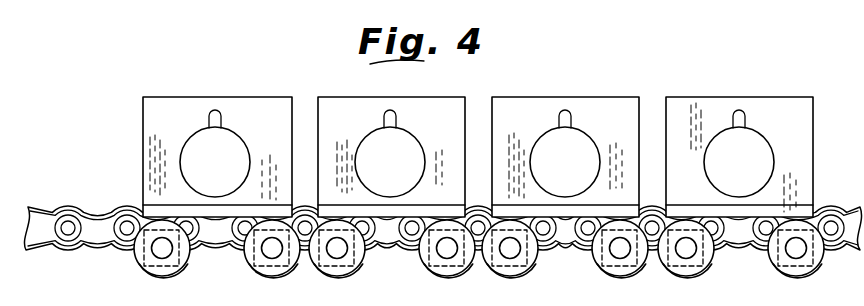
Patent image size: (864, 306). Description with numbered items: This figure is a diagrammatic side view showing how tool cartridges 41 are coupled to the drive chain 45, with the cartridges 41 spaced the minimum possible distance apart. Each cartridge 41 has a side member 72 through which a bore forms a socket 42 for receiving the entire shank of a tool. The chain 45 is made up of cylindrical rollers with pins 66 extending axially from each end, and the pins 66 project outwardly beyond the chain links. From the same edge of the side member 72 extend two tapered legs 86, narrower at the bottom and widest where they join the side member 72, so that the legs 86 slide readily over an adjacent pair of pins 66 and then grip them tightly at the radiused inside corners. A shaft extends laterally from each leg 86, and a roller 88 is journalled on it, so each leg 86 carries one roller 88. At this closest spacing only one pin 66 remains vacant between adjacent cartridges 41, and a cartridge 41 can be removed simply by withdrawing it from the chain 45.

The cartridge 41 is at (201, 80).
The socket 42 is at (233, 137).
The chain 45 is at (106, 191).
The pin 66 is at (68, 227).
The side member 72 is at (157, 117).
The leg 86 is at (148, 251).
The roller 88 is at (160, 277).